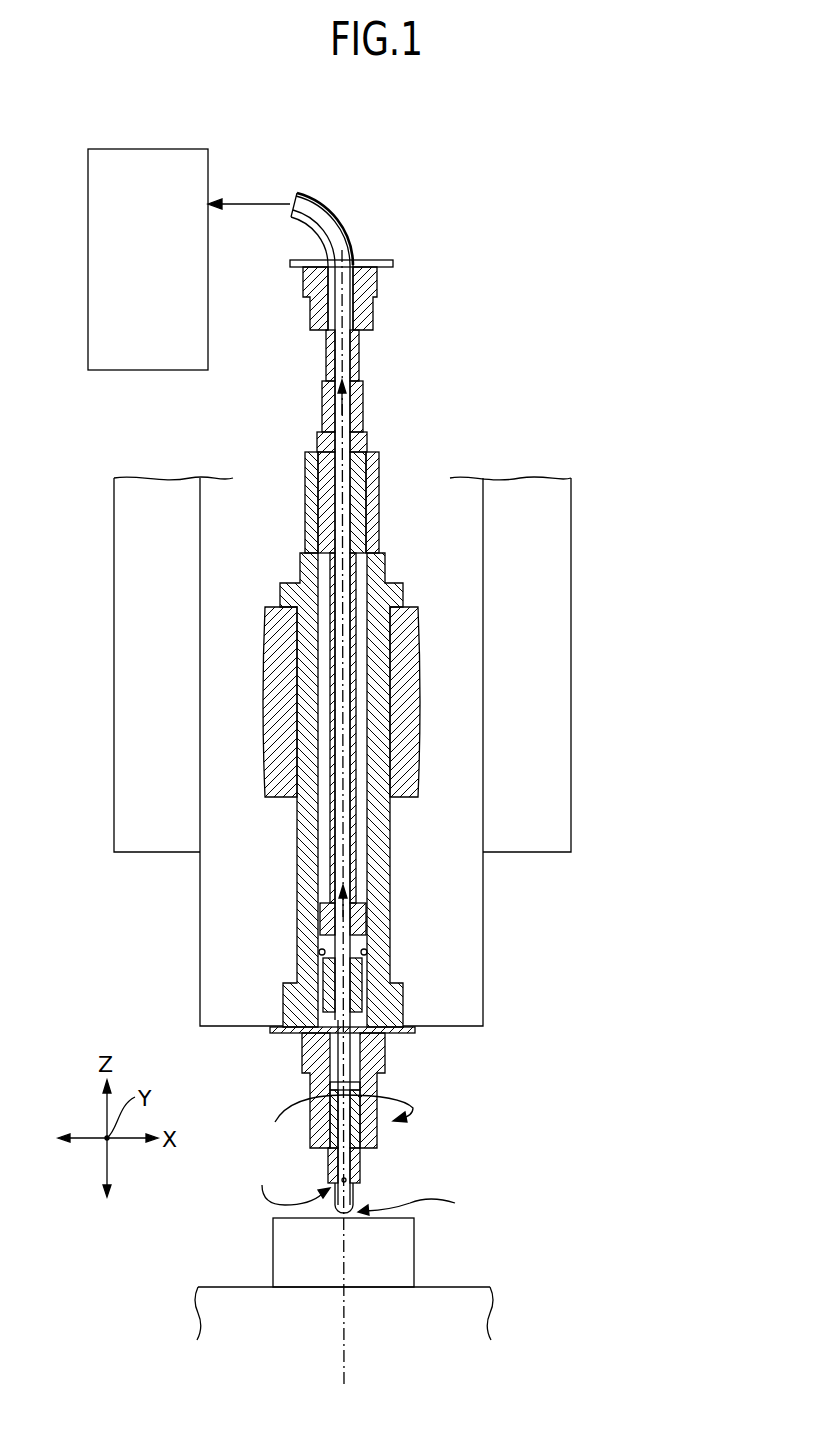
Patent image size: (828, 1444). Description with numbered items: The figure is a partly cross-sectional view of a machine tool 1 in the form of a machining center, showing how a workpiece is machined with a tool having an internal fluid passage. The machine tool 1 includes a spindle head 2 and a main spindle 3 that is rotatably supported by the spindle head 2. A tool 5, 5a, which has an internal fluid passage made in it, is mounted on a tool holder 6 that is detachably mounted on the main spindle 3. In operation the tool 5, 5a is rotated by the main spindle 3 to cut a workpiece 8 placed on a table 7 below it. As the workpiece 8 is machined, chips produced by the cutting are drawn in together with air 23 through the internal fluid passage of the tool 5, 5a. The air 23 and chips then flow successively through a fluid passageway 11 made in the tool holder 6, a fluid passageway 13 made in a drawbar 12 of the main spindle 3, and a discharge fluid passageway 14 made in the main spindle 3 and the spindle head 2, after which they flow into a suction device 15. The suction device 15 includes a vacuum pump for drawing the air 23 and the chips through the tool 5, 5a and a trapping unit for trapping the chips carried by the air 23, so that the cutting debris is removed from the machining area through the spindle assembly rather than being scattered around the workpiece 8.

The machine tool 1 is at (636, 343).
The spindle head 2 is at (573, 733).
The main spindle 3 is at (485, 968).
The tool 5 is at (405, 1116).
The tool 5a is at (362, 1163).
The tool holder 6 is at (377, 1085).
The table 7 is at (484, 1280).
The workpiece 8 is at (415, 1245).
The fluid passageway 11 is at (345, 1052).
The drawbar 12 is at (360, 807).
The fluid passageway 13 is at (347, 855).
The discharge fluid passageway 14 is at (358, 218).
The suction device 15 is at (210, 153).
The air 23 is at (348, 406).